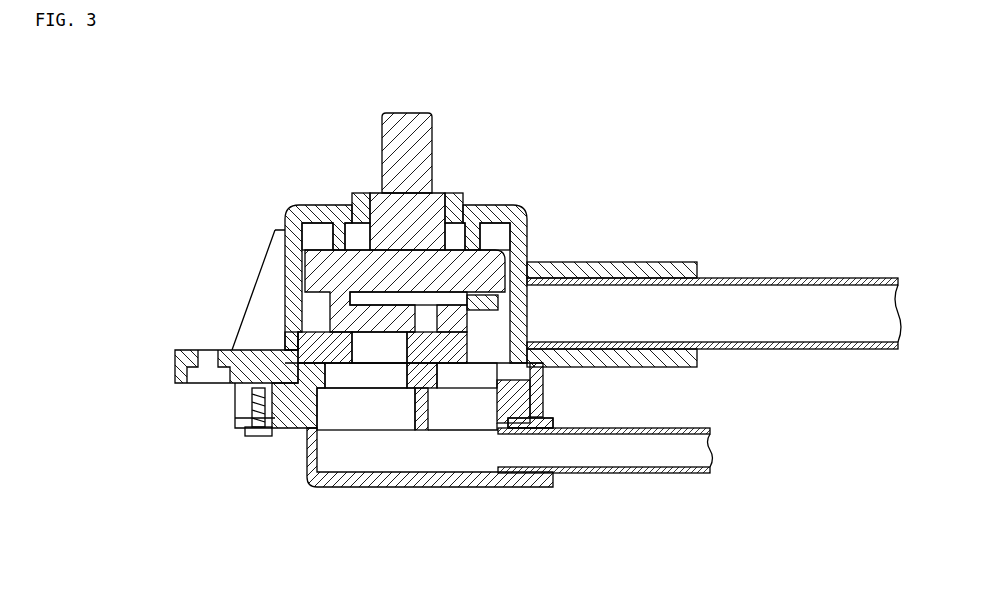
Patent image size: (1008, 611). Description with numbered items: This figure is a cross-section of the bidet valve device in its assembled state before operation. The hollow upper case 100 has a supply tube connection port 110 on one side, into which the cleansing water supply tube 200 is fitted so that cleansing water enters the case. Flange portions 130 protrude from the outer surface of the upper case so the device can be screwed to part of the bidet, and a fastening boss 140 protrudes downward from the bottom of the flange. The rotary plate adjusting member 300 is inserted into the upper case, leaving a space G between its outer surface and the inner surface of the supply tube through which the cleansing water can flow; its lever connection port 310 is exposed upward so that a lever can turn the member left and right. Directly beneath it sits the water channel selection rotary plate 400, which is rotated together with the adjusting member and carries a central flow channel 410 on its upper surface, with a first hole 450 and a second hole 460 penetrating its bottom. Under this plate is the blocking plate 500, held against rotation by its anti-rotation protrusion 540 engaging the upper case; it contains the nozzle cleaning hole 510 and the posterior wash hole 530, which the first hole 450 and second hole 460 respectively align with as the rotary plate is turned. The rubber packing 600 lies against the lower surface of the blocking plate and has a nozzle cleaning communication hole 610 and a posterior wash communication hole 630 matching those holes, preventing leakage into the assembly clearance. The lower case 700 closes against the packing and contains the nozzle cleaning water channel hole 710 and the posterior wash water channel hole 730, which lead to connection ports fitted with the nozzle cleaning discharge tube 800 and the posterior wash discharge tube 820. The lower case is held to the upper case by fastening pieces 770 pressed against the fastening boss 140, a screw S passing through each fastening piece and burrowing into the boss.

The upper case 100 is at (487, 212).
The supply tube connection port 110 is at (625, 268).
The flange portion 130 is at (180, 358).
The fastening boss 140 is at (245, 398).
The cleansing water supply tube 200 is at (745, 282).
The rotary plate adjusting member 300 is at (370, 233).
The lever connection port 310 is at (397, 128).
The water channel selection rotary plate 400 is at (305, 290).
The central flow channel 410 is at (308, 212).
The first hole 450 is at (532, 310).
The second hole 460 is at (410, 290).
The space G is at (510, 247).
The blocking plate 500 is at (310, 355).
The nozzle cleaning hole 510 is at (543, 380).
The posterior wash hole 530 is at (313, 420).
The anti-rotation protrusion 540 is at (284, 336).
The packing 600 is at (540, 407).
The nozzle cleaning communication hole 610 is at (470, 378).
The posterior wash communication hole 630 is at (393, 385).
The lower case 700 is at (540, 403).
The nozzle cleaning water channel hole 710 is at (453, 410).
The posterior wash water channel hole 730 is at (360, 413).
The fastening piece 770 is at (233, 418).
The screw S is at (260, 437).
The nozzle cleaning discharge tube 800 is at (633, 473).
The posterior wash discharge tube 820 is at (530, 423).